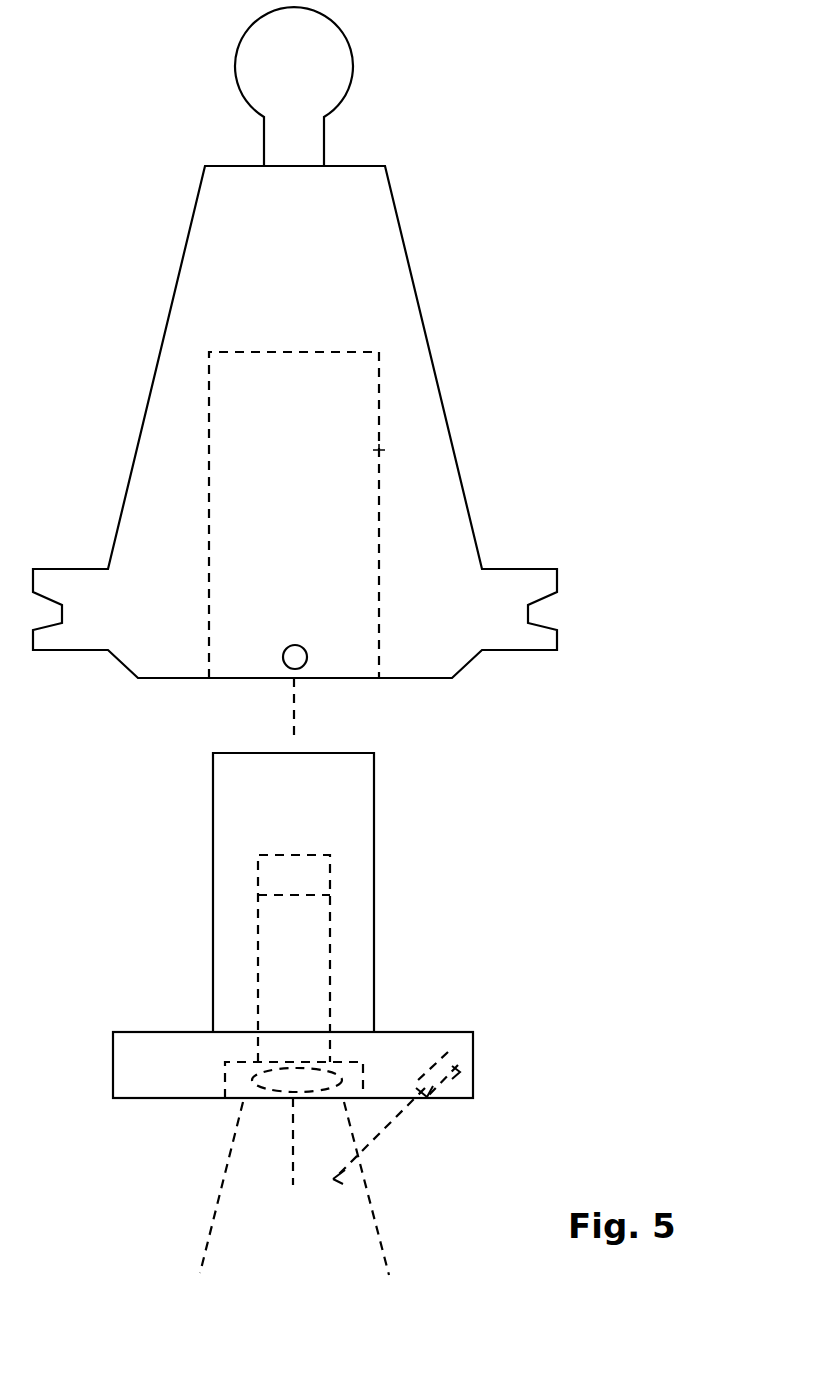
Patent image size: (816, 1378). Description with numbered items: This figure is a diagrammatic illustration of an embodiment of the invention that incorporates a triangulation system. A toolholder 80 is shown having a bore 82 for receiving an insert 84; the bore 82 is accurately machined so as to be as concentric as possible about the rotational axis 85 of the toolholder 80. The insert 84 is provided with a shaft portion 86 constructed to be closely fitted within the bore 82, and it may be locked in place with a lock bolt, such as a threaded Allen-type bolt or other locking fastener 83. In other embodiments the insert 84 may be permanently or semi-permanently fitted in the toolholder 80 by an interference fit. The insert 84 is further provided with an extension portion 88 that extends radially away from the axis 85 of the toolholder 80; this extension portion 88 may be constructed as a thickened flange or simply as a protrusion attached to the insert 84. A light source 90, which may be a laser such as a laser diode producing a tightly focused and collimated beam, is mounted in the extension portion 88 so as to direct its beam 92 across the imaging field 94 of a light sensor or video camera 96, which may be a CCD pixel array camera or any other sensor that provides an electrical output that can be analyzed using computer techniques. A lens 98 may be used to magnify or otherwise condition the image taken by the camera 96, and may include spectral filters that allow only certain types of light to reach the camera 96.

The toolholder 80 is at (440, 275).
The bore 82 is at (370, 437).
The locking fastener 83 is at (299, 641).
The insert 84 is at (188, 881).
The axis 85 is at (295, 735).
The shaft portion 86 is at (374, 792).
The extension portion 88 is at (413, 1032).
The light source 90 is at (473, 1075).
The beam 92 is at (313, 1193).
The imaging field 94 is at (268, 1192).
The video camera 96 is at (305, 890).
The lens 98 is at (236, 1076).